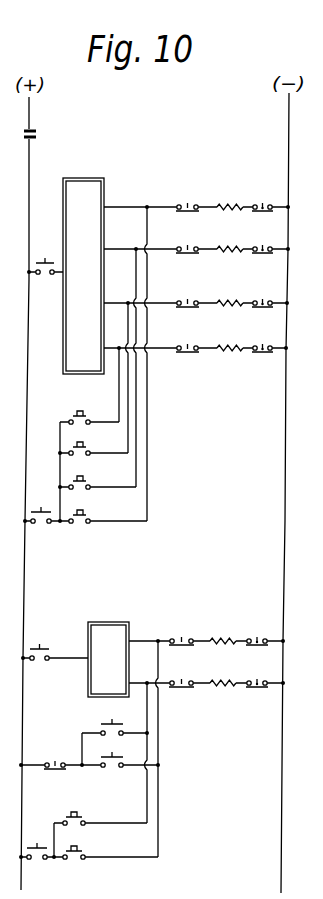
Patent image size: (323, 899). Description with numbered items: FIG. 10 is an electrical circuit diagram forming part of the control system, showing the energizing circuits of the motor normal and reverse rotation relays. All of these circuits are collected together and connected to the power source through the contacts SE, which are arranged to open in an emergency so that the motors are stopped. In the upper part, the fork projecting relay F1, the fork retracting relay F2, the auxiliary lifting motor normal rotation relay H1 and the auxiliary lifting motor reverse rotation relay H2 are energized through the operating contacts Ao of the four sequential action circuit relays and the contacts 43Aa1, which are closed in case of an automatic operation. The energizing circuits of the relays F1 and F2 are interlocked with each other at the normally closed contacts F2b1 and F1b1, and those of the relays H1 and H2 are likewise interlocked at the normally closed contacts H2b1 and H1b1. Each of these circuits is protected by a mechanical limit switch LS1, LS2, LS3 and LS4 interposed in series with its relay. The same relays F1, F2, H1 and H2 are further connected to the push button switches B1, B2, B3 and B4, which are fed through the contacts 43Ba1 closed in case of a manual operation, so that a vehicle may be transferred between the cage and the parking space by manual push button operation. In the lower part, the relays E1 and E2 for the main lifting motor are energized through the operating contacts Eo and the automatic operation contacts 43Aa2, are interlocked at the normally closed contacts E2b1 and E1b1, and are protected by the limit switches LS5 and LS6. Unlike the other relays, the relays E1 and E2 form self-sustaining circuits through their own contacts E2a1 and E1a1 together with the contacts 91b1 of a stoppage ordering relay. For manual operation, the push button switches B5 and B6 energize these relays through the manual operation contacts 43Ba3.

The emergency contacts SE is at (45, 137).
The operating contacts of the sequential action circuit relays Ao is at (88, 188).
The automatic operation contacts 43Aa1 is at (45, 255).
The normally closed contact of the fork retracting relay F2b1 is at (183, 199).
The fork projecting relay F1 is at (230, 198).
The mechanical limit switch LS1 is at (260, 199).
The normally closed contact of the fork projecting relay F1b1 is at (183, 241).
The fork retracting relay F2 is at (230, 240).
The mechanical limit switch LS2 is at (260, 241).
The normally closed contact of the auxiliary lifting motor reverse rotation relay H2b1 is at (183, 295).
The auxiliary lifting motor normal rotation relay H1 is at (230, 294).
The mechanical limit switch LS3 is at (260, 296).
The normally closed contact of the auxiliary lifting motor normal rotation relay H1b1 is at (183, 340).
The auxiliary lifting motor reverse rotation relay H2 is at (230, 339).
The mechanical limit switch LS4 is at (260, 340).
The push button switch B1 is at (89, 409).
The push button switch B2 is at (94, 441).
The push button switch B3 is at (98, 475).
The push button switch B4 is at (103, 509).
The manual operation contacts 43Ba1 is at (41, 504).
The operating contacts of the sequential action circuit relays Eo is at (110, 632).
The automatic operation contacts 43Aa2 is at (54, 645).
The normally closed contact of the main lifting motor reverse rotation relay E2b1 is at (178, 632).
The main lifting motor relay E1 is at (223, 631).
The mechanical limit switch LS5 is at (257, 632).
The normally closed contact of the main lifting motor normal rotation relay E1b1 is at (178, 674).
The main lifting motor relay E2 is at (223, 673).
The mechanical limit switch LS6 is at (257, 674).
The self-sustaining contact of relay E2 E2a1 is at (114, 720).
The self-sustaining contact of relay E1 E1a1 is at (120, 752).
The contacts of the stoppage ordering relay 91b1 is at (50, 756).
The manual operation contacts 43Ba3 is at (36, 840).
The push button switch B5 is at (100, 809).
The push button switch B6 is at (106, 844).